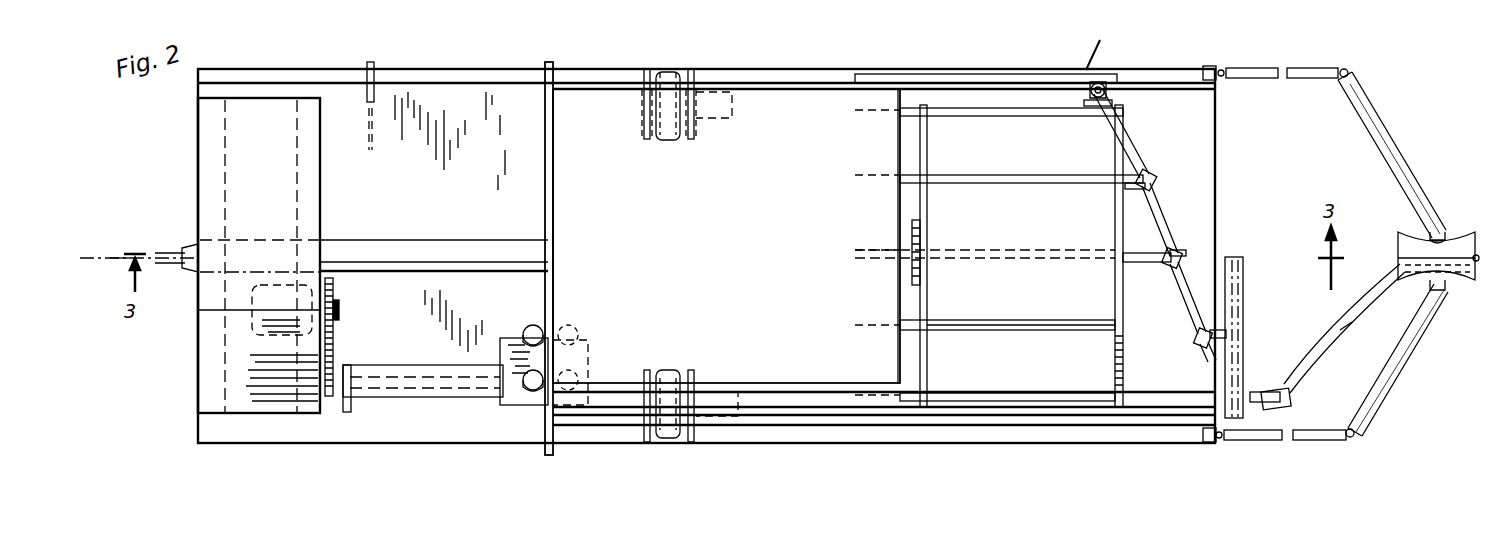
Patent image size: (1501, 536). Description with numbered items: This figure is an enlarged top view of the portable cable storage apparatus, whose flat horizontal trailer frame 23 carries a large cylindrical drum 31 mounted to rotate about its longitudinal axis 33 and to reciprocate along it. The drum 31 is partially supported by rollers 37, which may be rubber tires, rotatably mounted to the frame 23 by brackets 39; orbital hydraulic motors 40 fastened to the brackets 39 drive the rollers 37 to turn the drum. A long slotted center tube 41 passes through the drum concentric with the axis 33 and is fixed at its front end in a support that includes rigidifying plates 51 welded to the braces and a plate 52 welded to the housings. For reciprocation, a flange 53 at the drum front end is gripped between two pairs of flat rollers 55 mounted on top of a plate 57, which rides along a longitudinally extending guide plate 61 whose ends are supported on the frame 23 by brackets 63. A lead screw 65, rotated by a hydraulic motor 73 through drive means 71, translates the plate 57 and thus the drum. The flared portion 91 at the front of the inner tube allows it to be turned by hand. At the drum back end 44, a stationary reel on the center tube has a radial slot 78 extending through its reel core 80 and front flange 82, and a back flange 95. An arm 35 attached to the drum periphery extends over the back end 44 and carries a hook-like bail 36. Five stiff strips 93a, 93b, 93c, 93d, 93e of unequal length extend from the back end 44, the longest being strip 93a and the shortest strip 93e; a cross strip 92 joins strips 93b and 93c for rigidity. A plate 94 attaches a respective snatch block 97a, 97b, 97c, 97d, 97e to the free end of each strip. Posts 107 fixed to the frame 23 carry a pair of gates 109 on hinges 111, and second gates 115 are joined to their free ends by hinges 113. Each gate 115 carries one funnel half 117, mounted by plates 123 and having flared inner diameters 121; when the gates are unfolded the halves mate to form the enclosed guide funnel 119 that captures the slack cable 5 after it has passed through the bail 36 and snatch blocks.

The slack cable 5 is at (200, 363).
The trailer frame 23 is at (472, 80).
The cylindrical drum 31 is at (735, 225).
The longitudinal axis 33 is at (112, 248).
The arm 35 is at (975, 74).
The hook-like bail 36 is at (1106, 92).
The rollers 37 is at (664, 76).
The brackets 39 is at (646, 70).
The orbital hydraulic motors 40 is at (722, 96).
The center tube 41 is at (472, 240).
The drum back end 44 is at (905, 432).
The plates 51 is at (230, 147).
The plate 52 is at (290, 222).
The flange 53 is at (553, 66).
The flat rollers 55 is at (533, 326).
The plate 57 is at (505, 406).
The guide plate 61 is at (408, 366).
The brackets 63 is at (352, 408).
The lead screw 65 is at (330, 396).
The drive means 71 is at (338, 322).
The hydraulic motor 73 is at (254, 330).
The radial slot 78 is at (1030, 332).
The reel core 80 is at (975, 290).
The front flange 82 is at (927, 356).
The flared portion 91 is at (188, 248).
The cross strip 92 is at (1148, 262).
The strip 93a is at (1190, 388).
The strip 93b is at (1088, 344).
The strip 93c is at (1065, 248).
The strip 93d is at (1040, 184).
The strip 93e is at (1038, 116).
The plate 94 is at (1112, 103).
The back flange 95 is at (1113, 376).
The snatch block 97a is at (1290, 394).
The snatch block 97b is at (1196, 340).
The snatch block 97c is at (1215, 242).
The snatch block 97d is at (1150, 174).
The snatch block 97e is at (1094, 84).
The posts 107 is at (1207, 66).
The gates 109 is at (1312, 68).
The hinges 111 is at (1225, 78).
The hinges 113 is at (1348, 72).
The second gates 115 is at (1372, 122).
The funnel half 117 is at (1466, 234).
The guide funnel 119 is at (1452, 222).
The flared inner diameters 121 is at (1396, 258).
The plates 123 is at (1430, 236).